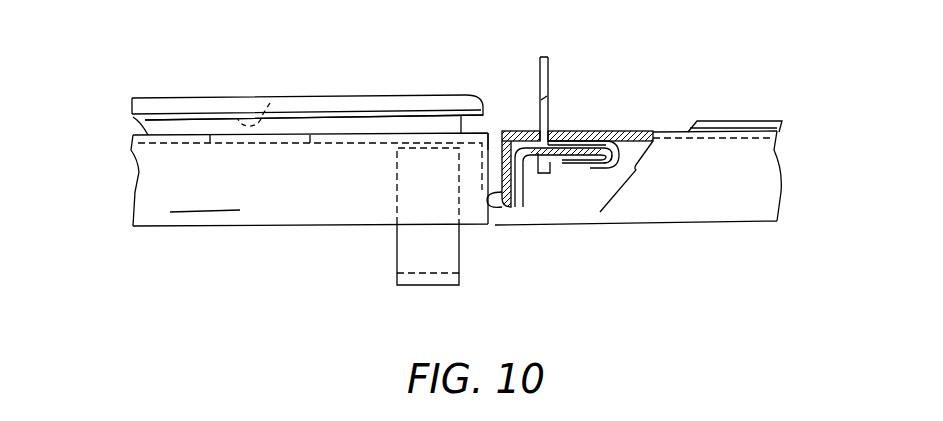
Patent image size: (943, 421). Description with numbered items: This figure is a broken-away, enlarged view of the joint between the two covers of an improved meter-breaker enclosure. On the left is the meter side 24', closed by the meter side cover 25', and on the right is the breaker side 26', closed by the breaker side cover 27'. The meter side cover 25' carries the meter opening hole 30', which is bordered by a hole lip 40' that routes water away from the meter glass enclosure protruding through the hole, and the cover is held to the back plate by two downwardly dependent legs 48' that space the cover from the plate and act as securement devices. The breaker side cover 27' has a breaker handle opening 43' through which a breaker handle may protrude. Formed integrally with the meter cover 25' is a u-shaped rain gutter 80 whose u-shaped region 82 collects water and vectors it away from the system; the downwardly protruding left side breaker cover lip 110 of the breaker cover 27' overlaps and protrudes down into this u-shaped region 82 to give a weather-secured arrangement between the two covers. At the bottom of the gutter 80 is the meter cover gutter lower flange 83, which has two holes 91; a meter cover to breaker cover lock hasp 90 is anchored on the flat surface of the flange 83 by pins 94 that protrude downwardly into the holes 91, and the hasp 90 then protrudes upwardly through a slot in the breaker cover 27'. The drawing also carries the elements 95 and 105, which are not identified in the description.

The meter side 24' is at (288, 179).
The meter side cover 25' is at (102, 122).
The breaker side 26' is at (663, 178).
The breaker side cover 27' is at (596, 105).
The meter opening hole 30' is at (314, 81).
The hole lip 40' is at (307, 75).
The breaker handle opening 43' is at (746, 110).
The downwardly dependent legs 48' is at (442, 240).
The u-shaped rain gutter 80 is at (541, 210).
The u-shaped region of gutter 82 is at (490, 203).
The meter cover gutter lower flange 83 is at (612, 168).
The meter cover to breaker cover lock hasp 90 is at (550, 63).
The holes 91 is at (535, 160).
The pins 94 is at (572, 166).
The hidden portion of pin 95 is at (548, 85).
The panel core 105 is at (238, 210).
The left side breaker cover lip 110 is at (493, 130).